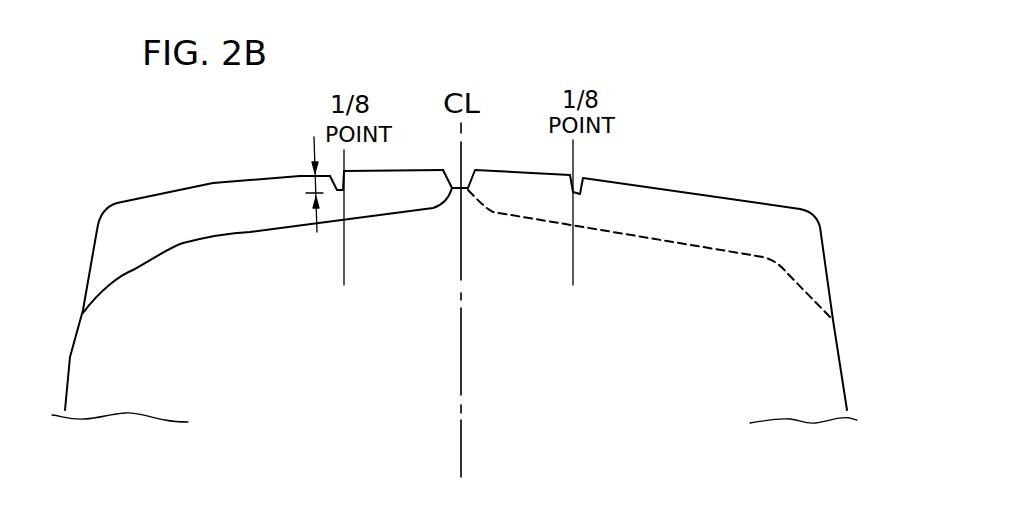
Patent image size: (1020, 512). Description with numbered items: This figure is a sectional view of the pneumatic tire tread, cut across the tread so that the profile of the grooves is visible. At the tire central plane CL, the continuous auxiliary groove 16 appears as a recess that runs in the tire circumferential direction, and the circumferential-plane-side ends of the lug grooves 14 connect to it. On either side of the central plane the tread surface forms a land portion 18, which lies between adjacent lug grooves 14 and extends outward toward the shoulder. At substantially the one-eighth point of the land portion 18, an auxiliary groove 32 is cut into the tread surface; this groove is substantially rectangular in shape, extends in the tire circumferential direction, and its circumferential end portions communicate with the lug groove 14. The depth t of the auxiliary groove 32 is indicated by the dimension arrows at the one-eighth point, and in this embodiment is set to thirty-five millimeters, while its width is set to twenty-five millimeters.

The lug groove 14 is at (237, 233).
The auxiliary groove 16 is at (473, 173).
The land portion 18 is at (820, 257).
The auxiliary groove 32 is at (584, 178).
The depth t is at (304, 193).